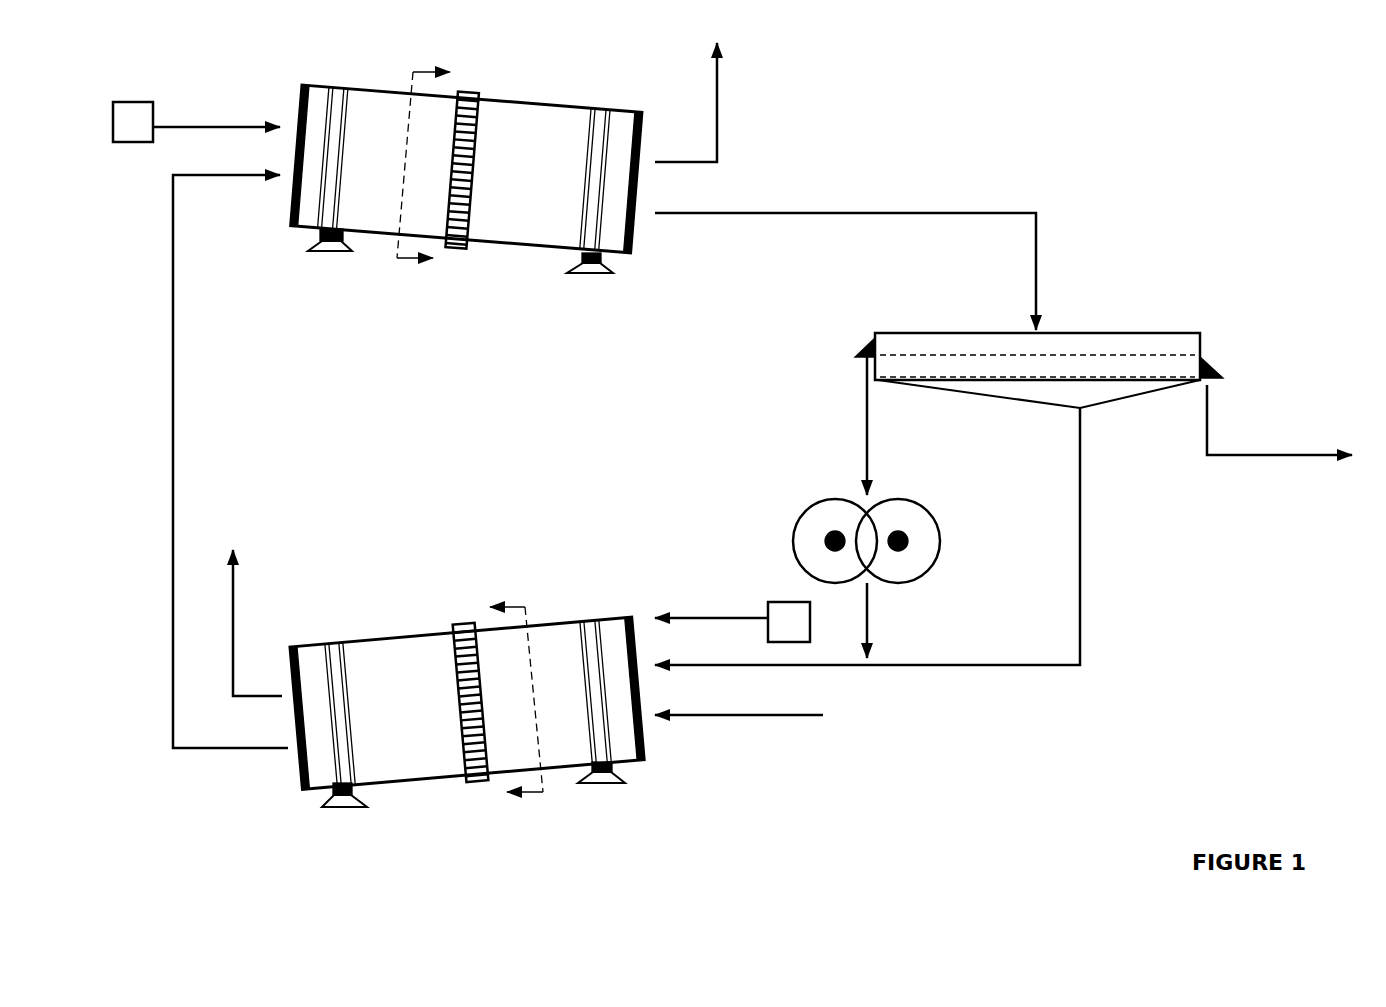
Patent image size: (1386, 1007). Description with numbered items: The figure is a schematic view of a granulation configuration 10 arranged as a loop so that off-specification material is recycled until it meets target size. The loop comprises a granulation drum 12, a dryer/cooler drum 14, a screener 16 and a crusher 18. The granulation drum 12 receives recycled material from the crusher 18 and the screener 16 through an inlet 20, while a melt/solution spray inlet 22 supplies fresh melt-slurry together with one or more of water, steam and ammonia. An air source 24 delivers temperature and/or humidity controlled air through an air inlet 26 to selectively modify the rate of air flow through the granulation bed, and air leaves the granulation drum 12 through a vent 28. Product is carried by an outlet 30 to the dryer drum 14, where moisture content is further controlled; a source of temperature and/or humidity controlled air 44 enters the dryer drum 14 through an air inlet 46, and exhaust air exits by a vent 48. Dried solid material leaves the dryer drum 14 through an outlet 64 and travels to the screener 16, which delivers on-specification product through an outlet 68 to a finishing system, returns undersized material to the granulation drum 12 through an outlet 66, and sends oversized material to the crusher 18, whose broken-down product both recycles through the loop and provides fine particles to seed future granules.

The granulation configuration 10 is at (960, 95).
The granulation drum 12 is at (342, 733).
The dryer/cooler drum 14 is at (345, 115).
The screener 16 is at (1110, 265).
The crusher 18 is at (922, 544).
The inlet 20 is at (825, 660).
The melt/solution spray inlet 22 is at (763, 713).
The air source 24 is at (787, 600).
The air inlet 26 is at (728, 618).
The vent 28 is at (235, 600).
The outlet 30 is at (172, 360).
The source of temperature and/or humidity controlled air 44 is at (133, 143).
The air inlet 46 is at (217, 122).
The vent 48 is at (718, 90).
The outlet 64 is at (835, 208).
The outlet 66 is at (867, 413).
The outlet 68 is at (1208, 422).